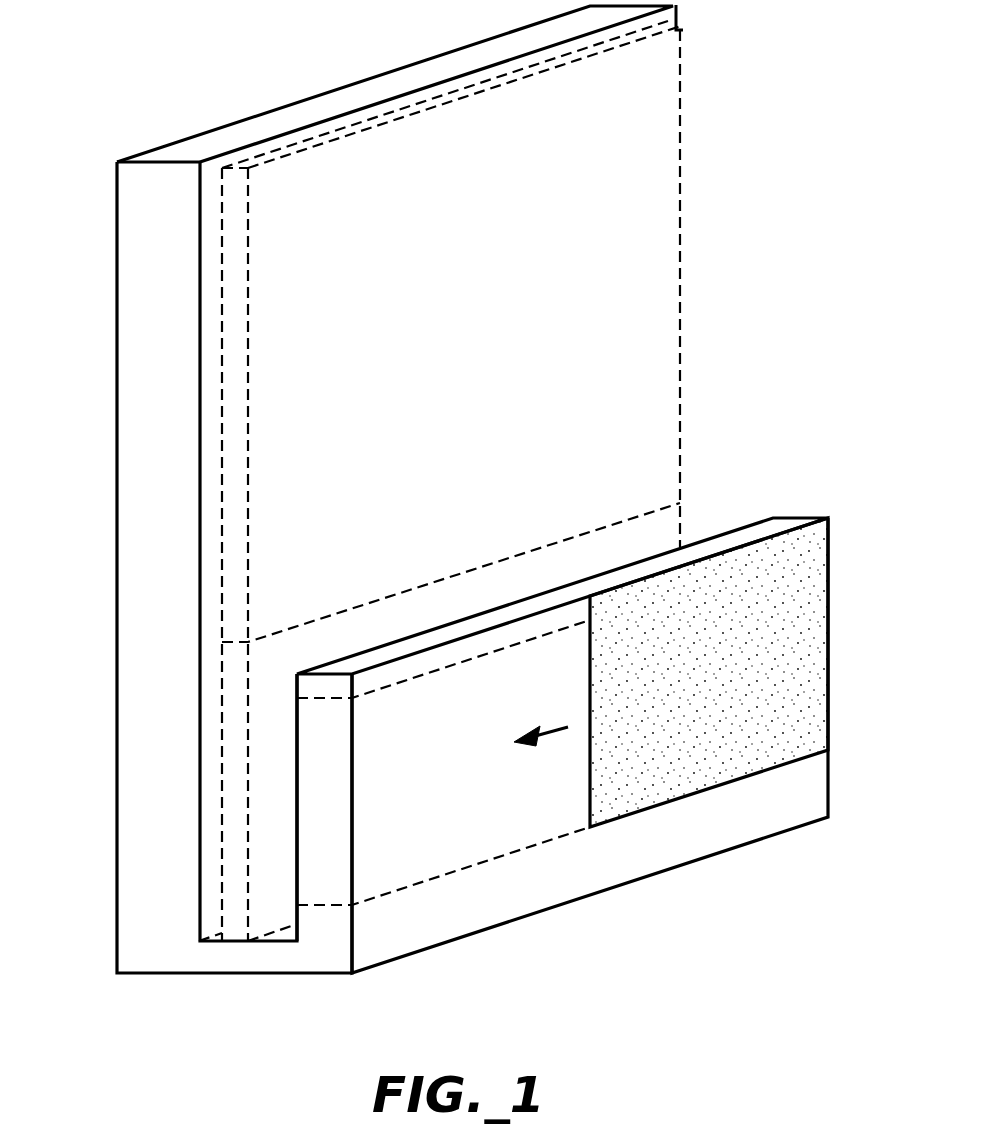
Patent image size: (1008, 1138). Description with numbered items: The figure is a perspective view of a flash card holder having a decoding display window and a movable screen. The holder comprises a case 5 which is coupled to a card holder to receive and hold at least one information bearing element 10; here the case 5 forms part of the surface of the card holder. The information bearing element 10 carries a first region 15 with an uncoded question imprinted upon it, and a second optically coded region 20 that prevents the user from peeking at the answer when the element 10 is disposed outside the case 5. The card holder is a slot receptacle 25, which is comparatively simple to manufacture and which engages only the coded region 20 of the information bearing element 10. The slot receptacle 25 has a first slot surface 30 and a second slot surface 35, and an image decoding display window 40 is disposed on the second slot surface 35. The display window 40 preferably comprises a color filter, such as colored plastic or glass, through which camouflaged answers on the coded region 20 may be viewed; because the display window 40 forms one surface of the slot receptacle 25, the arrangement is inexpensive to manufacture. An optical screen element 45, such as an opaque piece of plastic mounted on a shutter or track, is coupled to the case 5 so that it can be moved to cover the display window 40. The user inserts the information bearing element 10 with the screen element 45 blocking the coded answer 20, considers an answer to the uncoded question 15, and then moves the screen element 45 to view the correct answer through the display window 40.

The case 5 is at (283, 107).
The information bearing element 10 is at (683, 157).
The first region 15 is at (648, 357).
The second optically coded region 20 is at (650, 538).
The slot receptacle 25 is at (283, 936).
The first slot surface 30 is at (117, 397).
The second slot surface 35 is at (552, 893).
The image decoding display window 40 is at (453, 852).
The optical screen element 45 is at (828, 640).